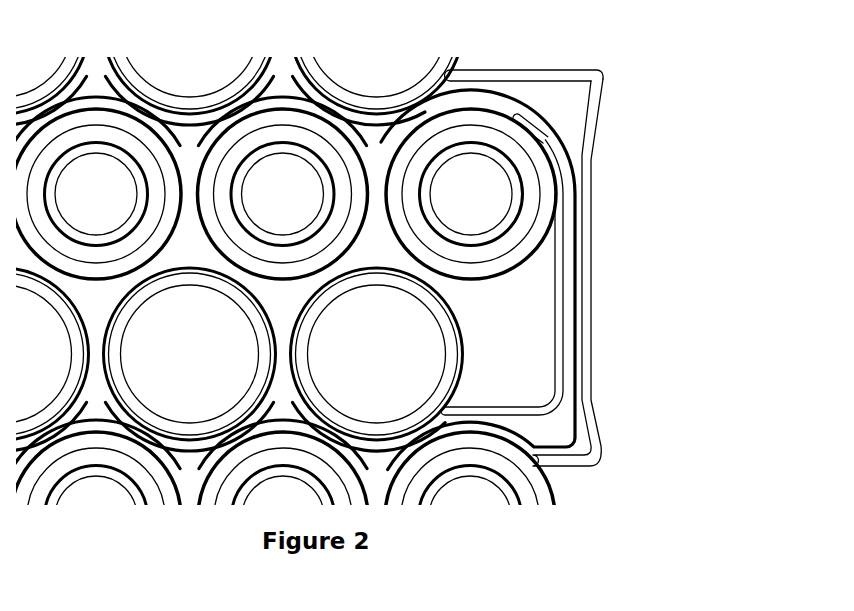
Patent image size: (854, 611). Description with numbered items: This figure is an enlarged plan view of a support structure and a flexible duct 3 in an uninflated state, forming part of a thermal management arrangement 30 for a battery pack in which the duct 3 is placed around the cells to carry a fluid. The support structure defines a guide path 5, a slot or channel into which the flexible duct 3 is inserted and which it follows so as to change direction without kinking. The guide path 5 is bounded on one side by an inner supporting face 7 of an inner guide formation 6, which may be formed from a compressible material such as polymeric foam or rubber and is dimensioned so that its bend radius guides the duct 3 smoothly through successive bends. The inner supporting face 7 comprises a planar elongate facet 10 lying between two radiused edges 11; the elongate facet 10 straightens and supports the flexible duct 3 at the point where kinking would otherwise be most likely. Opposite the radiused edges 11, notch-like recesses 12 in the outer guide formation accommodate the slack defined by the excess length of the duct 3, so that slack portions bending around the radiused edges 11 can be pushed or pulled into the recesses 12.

The flexible duct 3 is at (571, 259).
The guide path 5 is at (541, 295).
The inner guide formation 6 is at (562, 278).
The inner supporting face 7 is at (562, 278).
The planar elongate facet 10 is at (562, 338).
The radiused edges 11 is at (545, 142).
The notch-like recesses 12 is at (585, 86).
The thermal management arrangement 30 is at (190, 458).